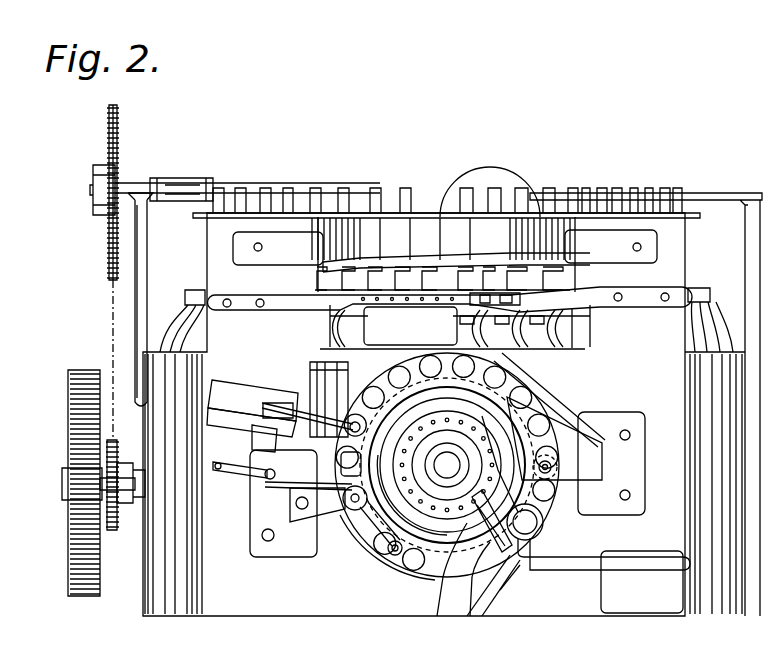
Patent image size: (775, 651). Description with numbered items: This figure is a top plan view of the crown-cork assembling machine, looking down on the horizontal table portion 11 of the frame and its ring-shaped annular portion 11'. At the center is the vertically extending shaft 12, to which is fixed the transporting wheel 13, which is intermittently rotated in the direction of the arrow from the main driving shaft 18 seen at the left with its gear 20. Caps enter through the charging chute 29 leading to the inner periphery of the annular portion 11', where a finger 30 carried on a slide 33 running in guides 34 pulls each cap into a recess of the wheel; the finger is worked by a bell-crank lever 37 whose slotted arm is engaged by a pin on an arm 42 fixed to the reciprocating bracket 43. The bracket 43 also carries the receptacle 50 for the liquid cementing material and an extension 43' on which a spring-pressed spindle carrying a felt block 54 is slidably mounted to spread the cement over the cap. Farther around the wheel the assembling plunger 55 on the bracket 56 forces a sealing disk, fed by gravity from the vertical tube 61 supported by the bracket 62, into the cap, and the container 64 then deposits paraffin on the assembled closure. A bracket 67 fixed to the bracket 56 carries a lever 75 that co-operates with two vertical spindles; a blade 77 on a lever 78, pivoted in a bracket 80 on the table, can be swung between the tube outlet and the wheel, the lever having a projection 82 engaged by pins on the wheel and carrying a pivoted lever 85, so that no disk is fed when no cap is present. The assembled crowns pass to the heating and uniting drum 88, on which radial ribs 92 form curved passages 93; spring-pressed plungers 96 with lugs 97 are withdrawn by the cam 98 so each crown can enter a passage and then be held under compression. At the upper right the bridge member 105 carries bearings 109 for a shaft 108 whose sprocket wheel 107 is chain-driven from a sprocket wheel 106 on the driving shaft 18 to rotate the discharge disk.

The table portion 11 is at (436, 391).
The annular portion of the table 11' is at (549, 400).
The shaft 12 is at (448, 460).
The transporting wheel 13 is at (372, 548).
The main driving shaft 18 is at (62, 486).
The gear 20 is at (70, 556).
The charging chute 29 is at (346, 375).
The finger 30 is at (302, 393).
The slide 33 is at (258, 400).
The guides 34 is at (232, 384).
The bell-crank lever 37 is at (240, 478).
The arm 42 is at (262, 480).
The bracket 43 is at (367, 548).
The extension of the bracket 43' is at (322, 519).
The receptacle 50 is at (369, 495).
The block 54 is at (392, 556).
The assembling plunger 55 is at (552, 466).
The bracket 56 is at (572, 425).
The vertical tube 61 is at (543, 522).
The bracket 62 is at (562, 572).
The container 64 is at (540, 400).
The bracket 67 is at (460, 520).
The lever 75 is at (497, 454).
The blade 77 is at (503, 590).
The lever 78 is at (488, 622).
The bracket 80 is at (446, 596).
The projection 82 is at (495, 495).
The lever 85 is at (470, 612).
The heating and uniting drum 88 is at (572, 342).
The ribs 92 is at (480, 326).
The curved passages 93 is at (565, 348).
The spring-pressed plungers 96 is at (575, 196).
The lugs 97 is at (578, 275).
The cam 98 is at (452, 258).
The bridge member 105 is at (706, 193).
The sprocket wheel 106 is at (112, 530).
The sprocket wheel 107 is at (108, 262).
The shaft 108 is at (240, 186).
The bearings 109 is at (192, 172).